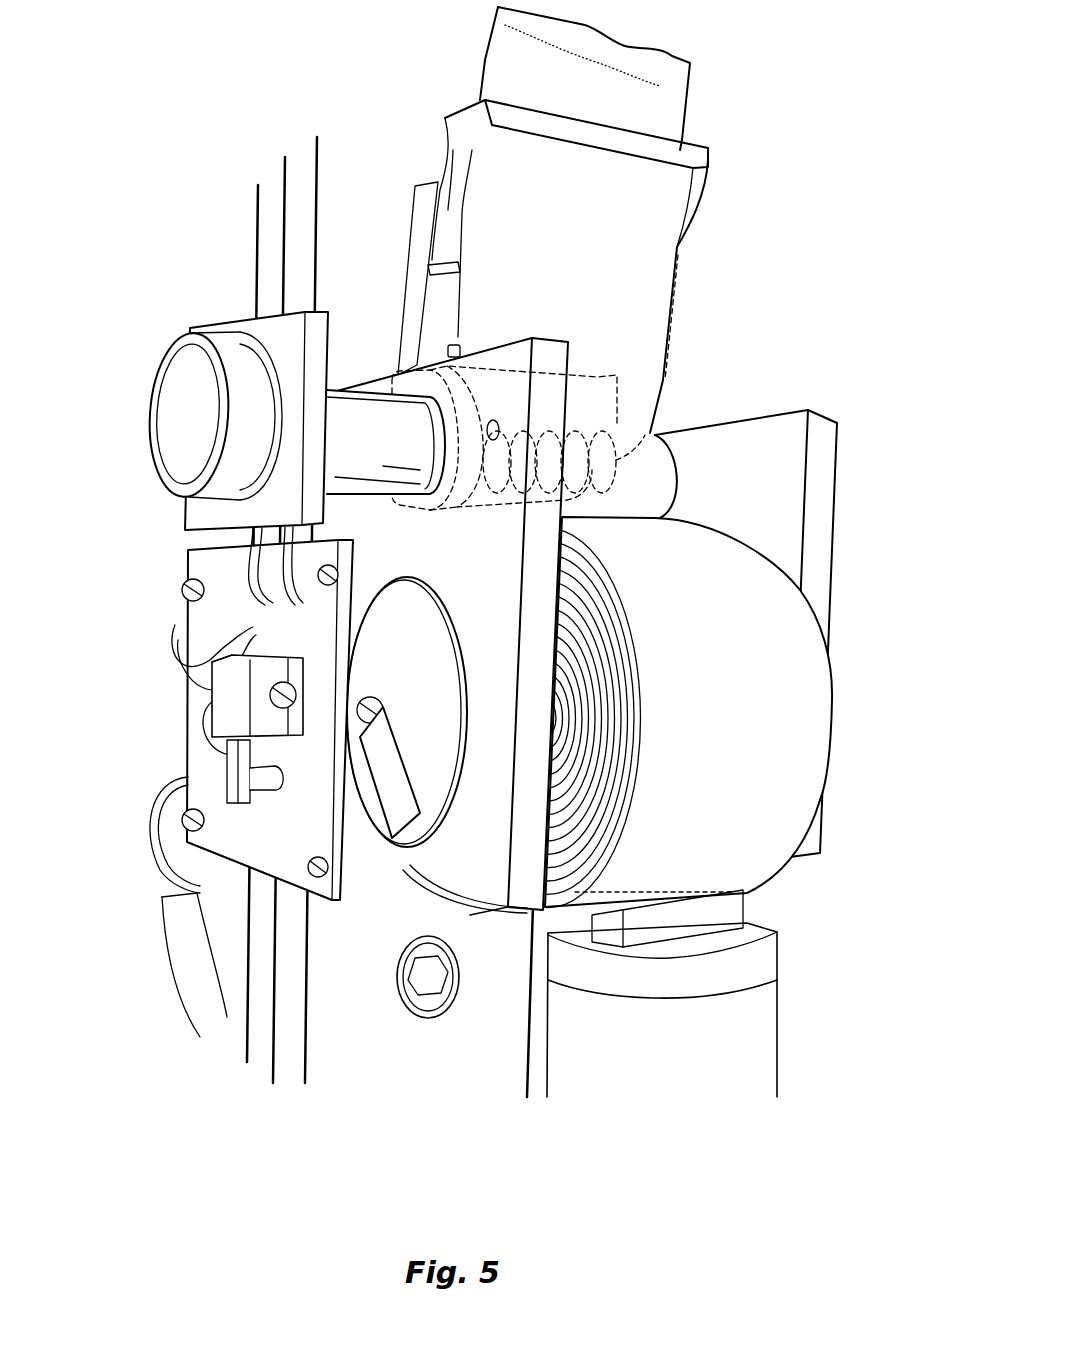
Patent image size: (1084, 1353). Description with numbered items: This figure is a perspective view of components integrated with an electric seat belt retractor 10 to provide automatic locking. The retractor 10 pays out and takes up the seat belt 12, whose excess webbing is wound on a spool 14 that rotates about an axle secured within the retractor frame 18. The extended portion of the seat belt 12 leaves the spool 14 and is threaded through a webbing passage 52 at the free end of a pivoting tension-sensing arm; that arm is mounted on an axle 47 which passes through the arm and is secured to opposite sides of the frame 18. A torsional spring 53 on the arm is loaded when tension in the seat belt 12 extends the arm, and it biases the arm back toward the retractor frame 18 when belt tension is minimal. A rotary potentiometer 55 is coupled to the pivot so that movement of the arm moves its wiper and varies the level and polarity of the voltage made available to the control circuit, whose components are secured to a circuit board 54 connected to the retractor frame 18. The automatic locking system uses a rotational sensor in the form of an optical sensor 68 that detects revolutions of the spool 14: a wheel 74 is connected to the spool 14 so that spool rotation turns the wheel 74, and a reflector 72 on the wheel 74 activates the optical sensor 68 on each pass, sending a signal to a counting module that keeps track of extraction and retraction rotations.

The retractor 10 is at (786, 257).
The seat belt 12 is at (662, 100).
The spool 14 is at (850, 646).
The retractor frame 18 is at (826, 497).
The axle 47 is at (640, 432).
The webbing passage 52 is at (702, 160).
The torsional spring 53 is at (617, 397).
The circuit board 54 is at (170, 780).
The potentiometer 55 is at (157, 415).
The optical sensor 68 is at (155, 683).
The reflector 72 is at (398, 780).
The wheel 74 is at (413, 648).